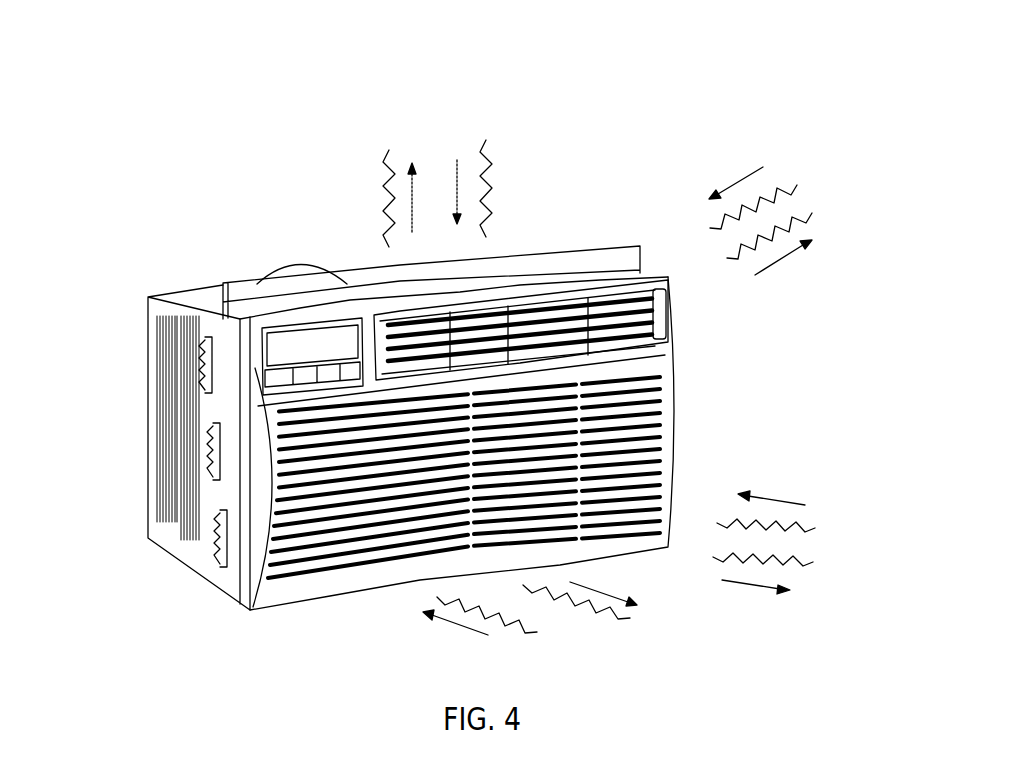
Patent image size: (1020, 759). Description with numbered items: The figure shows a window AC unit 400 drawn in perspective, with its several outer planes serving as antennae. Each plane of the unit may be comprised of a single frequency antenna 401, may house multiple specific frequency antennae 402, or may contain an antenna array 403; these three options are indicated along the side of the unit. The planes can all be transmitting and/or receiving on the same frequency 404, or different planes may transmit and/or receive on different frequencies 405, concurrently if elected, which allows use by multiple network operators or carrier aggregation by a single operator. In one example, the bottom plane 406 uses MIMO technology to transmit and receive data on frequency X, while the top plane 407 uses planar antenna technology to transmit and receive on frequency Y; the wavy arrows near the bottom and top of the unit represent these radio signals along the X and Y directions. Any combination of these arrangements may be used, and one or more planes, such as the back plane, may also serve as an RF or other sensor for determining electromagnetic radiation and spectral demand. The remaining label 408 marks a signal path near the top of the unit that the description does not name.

The window AC unit 400 is at (667, 416).
The single frequency antenna 401 is at (200, 353).
The multiple specific frequency antennae 402 is at (207, 440).
The antenna array 403 is at (217, 530).
The same frequency 404 is at (827, 542).
The different frequencies 405 is at (807, 193).
The bottom plane 406 is at (570, 627).
The top plane 407 is at (423, 121).
The downward airflow 408 is at (604, 122).